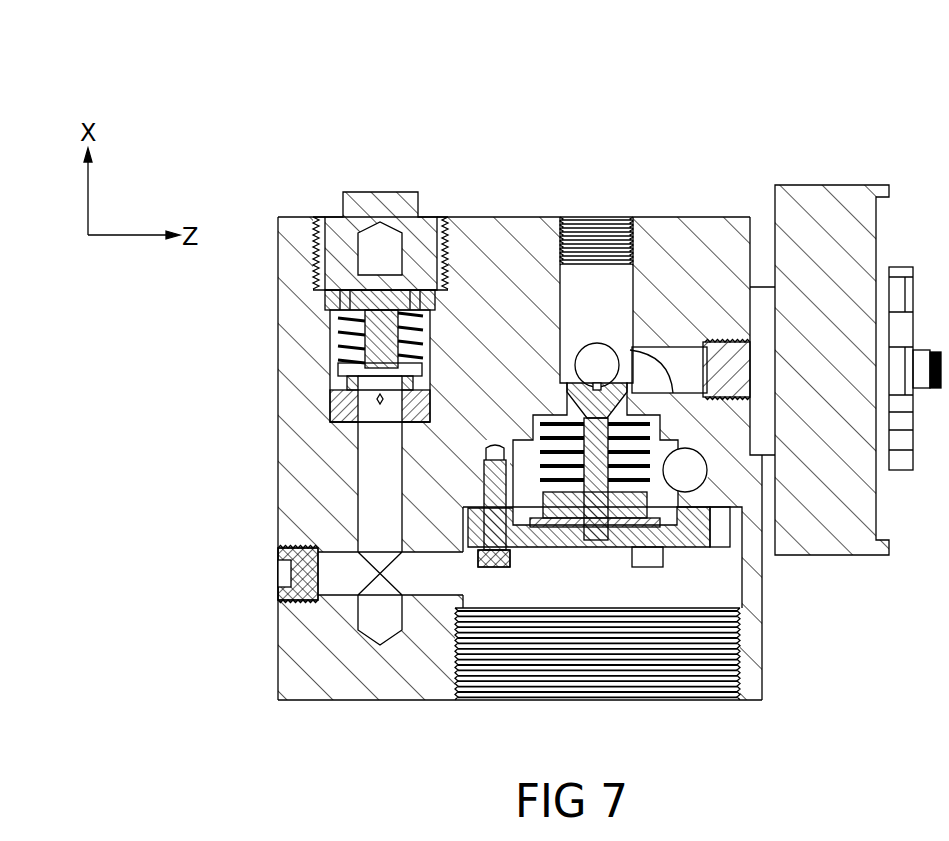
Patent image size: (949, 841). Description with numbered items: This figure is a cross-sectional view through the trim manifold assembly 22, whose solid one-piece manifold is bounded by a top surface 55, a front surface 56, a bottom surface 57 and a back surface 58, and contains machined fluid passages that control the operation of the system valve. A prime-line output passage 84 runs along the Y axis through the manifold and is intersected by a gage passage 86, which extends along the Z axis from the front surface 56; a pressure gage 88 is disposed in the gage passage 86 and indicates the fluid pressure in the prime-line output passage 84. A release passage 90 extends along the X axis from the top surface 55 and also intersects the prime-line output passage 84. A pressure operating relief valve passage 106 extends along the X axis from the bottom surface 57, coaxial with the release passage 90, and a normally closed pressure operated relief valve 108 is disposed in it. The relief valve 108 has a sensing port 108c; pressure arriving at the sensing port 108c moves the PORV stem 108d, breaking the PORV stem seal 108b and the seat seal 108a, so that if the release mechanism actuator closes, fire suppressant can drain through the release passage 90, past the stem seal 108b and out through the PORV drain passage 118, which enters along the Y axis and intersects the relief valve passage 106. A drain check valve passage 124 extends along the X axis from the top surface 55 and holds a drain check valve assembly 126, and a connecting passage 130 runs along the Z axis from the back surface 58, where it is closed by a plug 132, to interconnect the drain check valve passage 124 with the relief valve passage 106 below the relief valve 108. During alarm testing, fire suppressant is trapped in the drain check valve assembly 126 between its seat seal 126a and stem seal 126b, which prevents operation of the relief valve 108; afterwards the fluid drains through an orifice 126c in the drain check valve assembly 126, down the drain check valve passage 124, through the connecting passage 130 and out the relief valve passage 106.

The trim manifold assembly 22 is at (714, 112).
The top surface 55 is at (298, 216).
The front surface 56 is at (762, 680).
The bottom surface 57 is at (297, 703).
The back surface 58 is at (278, 244).
The prime-line output passage 84 is at (572, 362).
The gage passage 86 is at (673, 393).
The pressure gage 88 is at (838, 212).
The release passage 90 is at (590, 282).
The pressure operating relief valve (PORV) passage 106 is at (673, 655).
The pressure operated relief valve (PORV) 108 is at (550, 578).
The seat seal 108a is at (680, 512).
The PORV stem seal 108b is at (653, 362).
The sensing port 108c is at (625, 532).
The PORV stem 108d is at (665, 527).
The PORV drain passage 118 is at (692, 482).
The drain check valve passage 124 is at (378, 448).
The drain check valve assembly 126 is at (417, 172).
The seat seal 126a is at (352, 368).
The stem seal 126b is at (352, 312).
The orifice 126c is at (352, 402).
The connecting passage 130 is at (430, 587).
The plug 132 is at (295, 575).